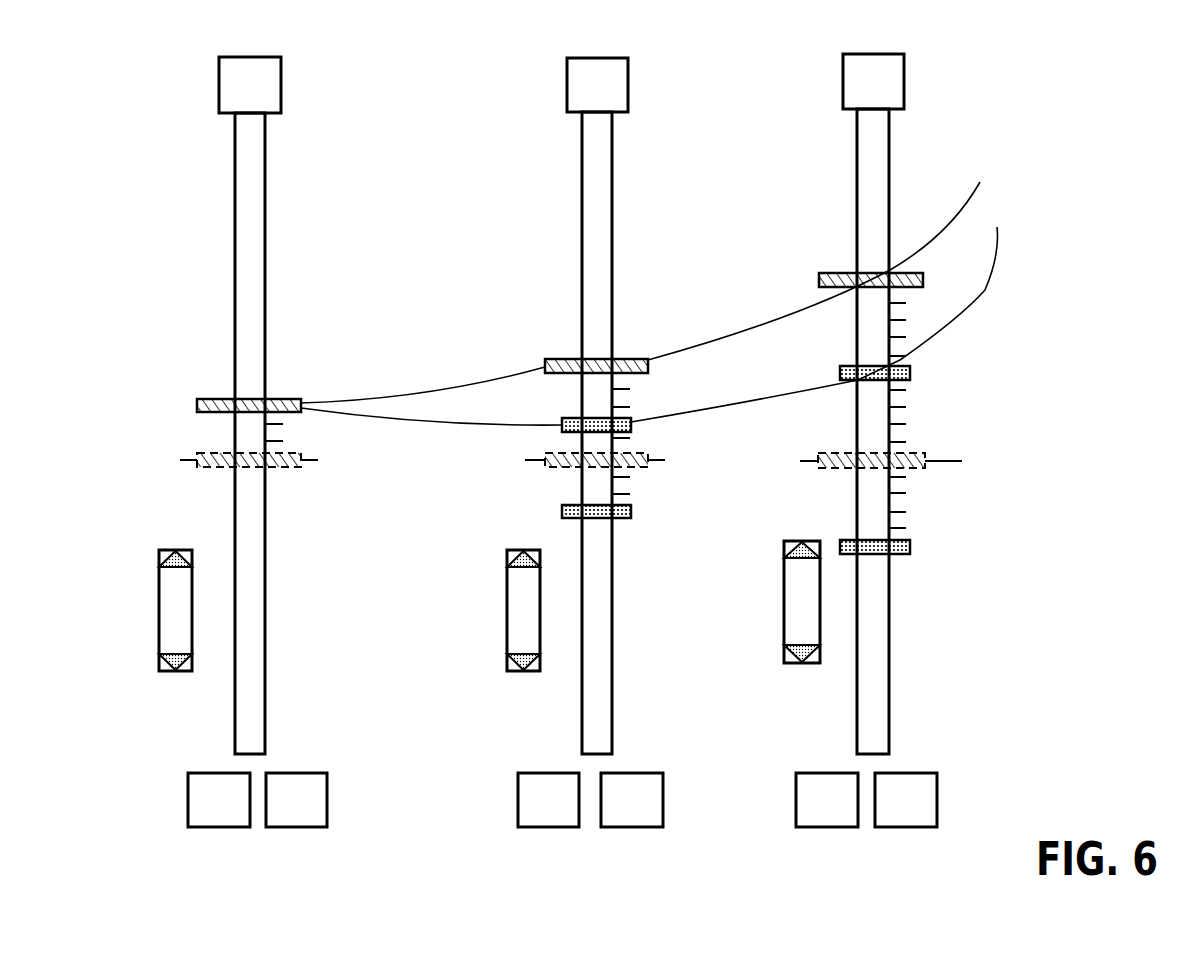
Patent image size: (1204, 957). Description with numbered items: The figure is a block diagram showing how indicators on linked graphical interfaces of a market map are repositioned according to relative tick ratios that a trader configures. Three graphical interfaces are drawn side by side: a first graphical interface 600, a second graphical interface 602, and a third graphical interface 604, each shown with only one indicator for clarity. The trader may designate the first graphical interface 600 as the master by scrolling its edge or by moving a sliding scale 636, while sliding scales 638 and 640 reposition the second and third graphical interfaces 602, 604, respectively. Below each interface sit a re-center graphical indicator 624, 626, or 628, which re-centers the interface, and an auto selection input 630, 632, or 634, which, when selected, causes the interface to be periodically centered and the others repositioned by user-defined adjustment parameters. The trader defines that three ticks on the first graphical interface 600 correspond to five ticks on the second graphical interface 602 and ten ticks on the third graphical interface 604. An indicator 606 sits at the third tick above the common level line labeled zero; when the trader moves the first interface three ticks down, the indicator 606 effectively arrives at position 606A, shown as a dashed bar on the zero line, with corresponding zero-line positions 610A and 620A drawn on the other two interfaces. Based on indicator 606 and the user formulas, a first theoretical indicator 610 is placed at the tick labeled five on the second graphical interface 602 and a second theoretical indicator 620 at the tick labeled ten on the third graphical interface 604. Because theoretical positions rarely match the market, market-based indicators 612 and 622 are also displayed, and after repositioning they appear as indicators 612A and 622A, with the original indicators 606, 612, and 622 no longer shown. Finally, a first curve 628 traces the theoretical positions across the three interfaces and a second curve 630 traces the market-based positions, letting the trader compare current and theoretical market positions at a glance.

The first graphical interface 600 is at (265, 178).
The second graphical interface 602 is at (612, 178).
The third graphical interface 604 is at (889, 178).
The indicator 606 is at (286, 396).
The position 606A is at (300, 457).
The first theoretical indicator 610 is at (648, 365).
The second slider zero position 610A is at (648, 457).
The indicator 612 is at (631, 422).
The indicator 612A is at (631, 510).
The second theoretical indicator 620 is at (923, 270).
The third slider zero position 620A is at (925, 457).
The indicator 622 is at (910, 370).
The indicator 622A is at (910, 545).
The graphical indicator 624 is at (190, 772).
The graphical indicator 626 is at (535, 772).
The first curve 628 is at (979, 187).
The second curve 630 is at (307, 772).
The auto selection input 632 is at (637, 772).
The auto selection input 634 is at (918, 772).
The sliding scale 636 is at (178, 540).
The sliding scale 638 is at (533, 512).
The sliding scale 640 is at (803, 540).